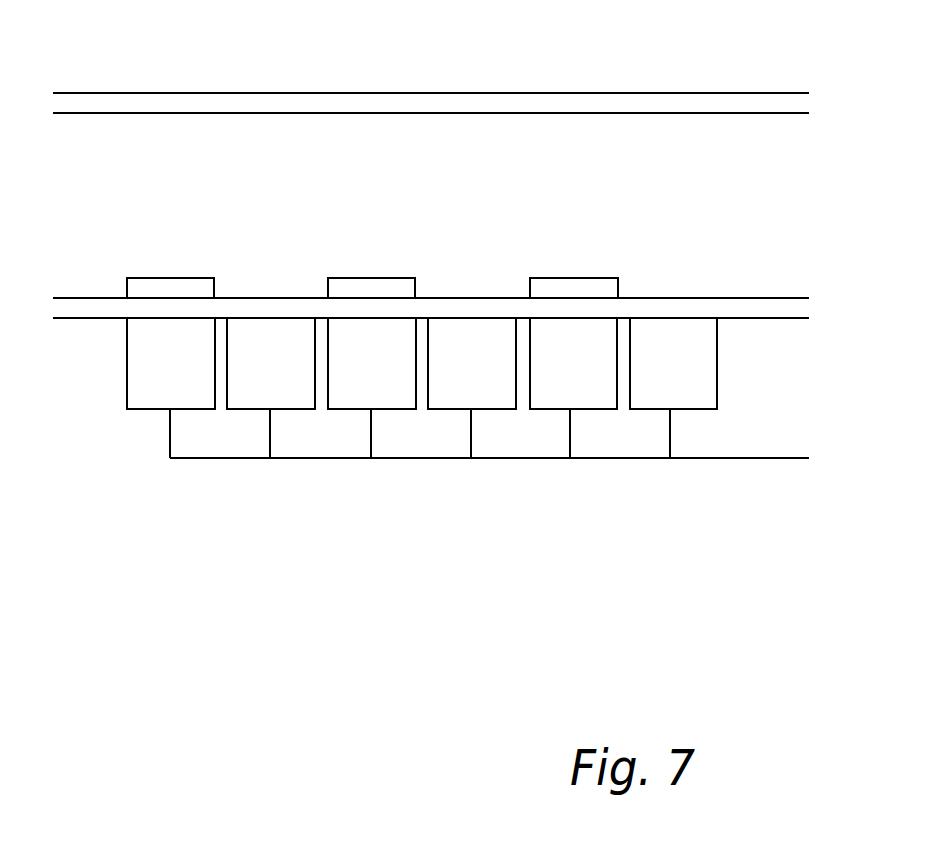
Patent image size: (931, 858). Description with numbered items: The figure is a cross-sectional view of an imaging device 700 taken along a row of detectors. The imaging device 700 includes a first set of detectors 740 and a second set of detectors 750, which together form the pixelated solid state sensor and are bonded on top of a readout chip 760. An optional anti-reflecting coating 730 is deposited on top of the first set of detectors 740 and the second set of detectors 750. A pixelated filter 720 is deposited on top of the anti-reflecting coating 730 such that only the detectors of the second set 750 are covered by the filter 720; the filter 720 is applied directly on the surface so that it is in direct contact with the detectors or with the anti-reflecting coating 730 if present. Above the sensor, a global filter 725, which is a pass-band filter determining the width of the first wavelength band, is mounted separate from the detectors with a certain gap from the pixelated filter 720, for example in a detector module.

The imaging device 700 is at (153, 560).
The pixelated filter 720 is at (166, 277).
The global filter 725 is at (711, 104).
The anti-reflecting coating 730 is at (780, 307).
The first set of detectors 740 is at (291, 412).
The second set of detectors 750 is at (148, 412).
The readout chip 760 is at (757, 455).